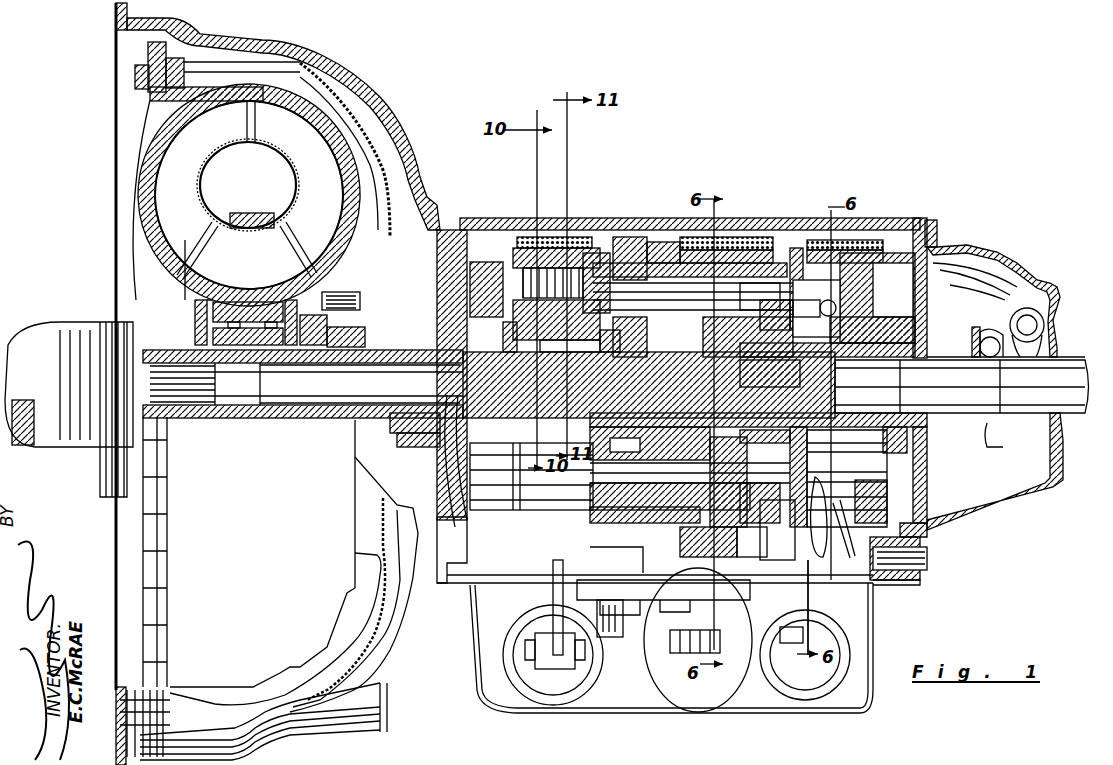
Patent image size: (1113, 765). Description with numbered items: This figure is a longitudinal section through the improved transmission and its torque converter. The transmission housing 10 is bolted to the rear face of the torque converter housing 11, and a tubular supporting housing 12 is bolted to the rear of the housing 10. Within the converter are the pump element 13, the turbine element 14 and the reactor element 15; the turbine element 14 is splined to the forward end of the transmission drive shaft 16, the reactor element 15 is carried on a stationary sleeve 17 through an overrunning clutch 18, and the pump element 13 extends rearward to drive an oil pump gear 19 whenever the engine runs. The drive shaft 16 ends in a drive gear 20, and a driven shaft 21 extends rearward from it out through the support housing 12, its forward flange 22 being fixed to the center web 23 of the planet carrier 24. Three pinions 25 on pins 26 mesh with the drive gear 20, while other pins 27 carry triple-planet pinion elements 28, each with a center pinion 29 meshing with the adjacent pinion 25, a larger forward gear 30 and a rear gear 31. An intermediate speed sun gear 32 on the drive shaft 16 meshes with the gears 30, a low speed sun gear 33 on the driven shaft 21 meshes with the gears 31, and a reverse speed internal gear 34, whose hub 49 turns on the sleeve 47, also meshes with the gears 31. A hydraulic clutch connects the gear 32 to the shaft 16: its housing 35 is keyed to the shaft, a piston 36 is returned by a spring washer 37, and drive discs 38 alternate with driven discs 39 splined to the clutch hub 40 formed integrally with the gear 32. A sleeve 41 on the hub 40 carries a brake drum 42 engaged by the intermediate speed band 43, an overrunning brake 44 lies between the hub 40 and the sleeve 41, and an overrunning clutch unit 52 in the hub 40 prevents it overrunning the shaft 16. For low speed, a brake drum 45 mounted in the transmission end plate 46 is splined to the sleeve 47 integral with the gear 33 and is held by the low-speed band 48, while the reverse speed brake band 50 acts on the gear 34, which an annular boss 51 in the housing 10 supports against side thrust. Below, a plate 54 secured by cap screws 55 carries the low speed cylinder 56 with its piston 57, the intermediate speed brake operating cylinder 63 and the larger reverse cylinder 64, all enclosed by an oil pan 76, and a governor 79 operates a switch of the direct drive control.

The housing 10 is at (657, 222).
The torque converter housing 11 is at (392, 90).
The tubular supporting housing 12 is at (1020, 268).
The pump element 13 is at (267, 424).
The turbine element 14 is at (244, 209).
The reactor element 15 is at (241, 292).
The transmission drive shaft 16 is at (245, 397).
The stationary sleeve 17 is at (313, 358).
The overrunning clutch 18 is at (243, 305).
The oil pump gear 19 is at (420, 340).
The drive gear 20 is at (667, 420).
The driven shaft 21 is at (1032, 387).
The flange 22 is at (700, 405).
The center web 23 is at (730, 418).
The planet carrier 24 is at (790, 280).
The pinions 25 is at (662, 515).
The pins 26 is at (713, 430).
The pins 27 is at (748, 283).
The triple-planet pinion element 28 is at (725, 262).
The center pinion 29 is at (665, 262).
The gear 30 is at (637, 255).
The gear 31 is at (792, 268).
The intermediate speed sun gear 32 is at (500, 528).
The low speed sun gear 33 is at (805, 308).
The reverse speed internal gear 34 is at (700, 455).
The housing 35 is at (515, 265).
The piston 36 is at (440, 275).
The spring washer 37 is at (440, 300).
The drive discs 38 is at (530, 272).
The driven discs 39 is at (565, 280).
The clutch hub 40 is at (585, 300).
The sleeve 41 is at (670, 255).
The brake drum 42 is at (555, 250).
The intermediate speed band 43 is at (575, 262).
The overrunning brake 44 is at (605, 330).
The brake drum 45 is at (876, 288).
The transmission end plate 46 is at (917, 317).
The sleeve 47 is at (917, 340).
The low-speed band 48 is at (860, 245).
The hub 49 is at (832, 342).
The reverse speed brake band 50 is at (688, 238).
The annular boss 51 is at (830, 245).
The overrunning clutch unit 52 is at (485, 268).
The plate 54 is at (663, 597).
The cap screws 55 is at (614, 630).
The low speed cylinder 56 is at (812, 693).
The piston 57 is at (805, 630).
The intermediate speed brake operating cylinder 63 is at (517, 673).
The cylinder 64 is at (698, 640).
The oil pan 76 is at (618, 713).
The governor 79 is at (990, 432).